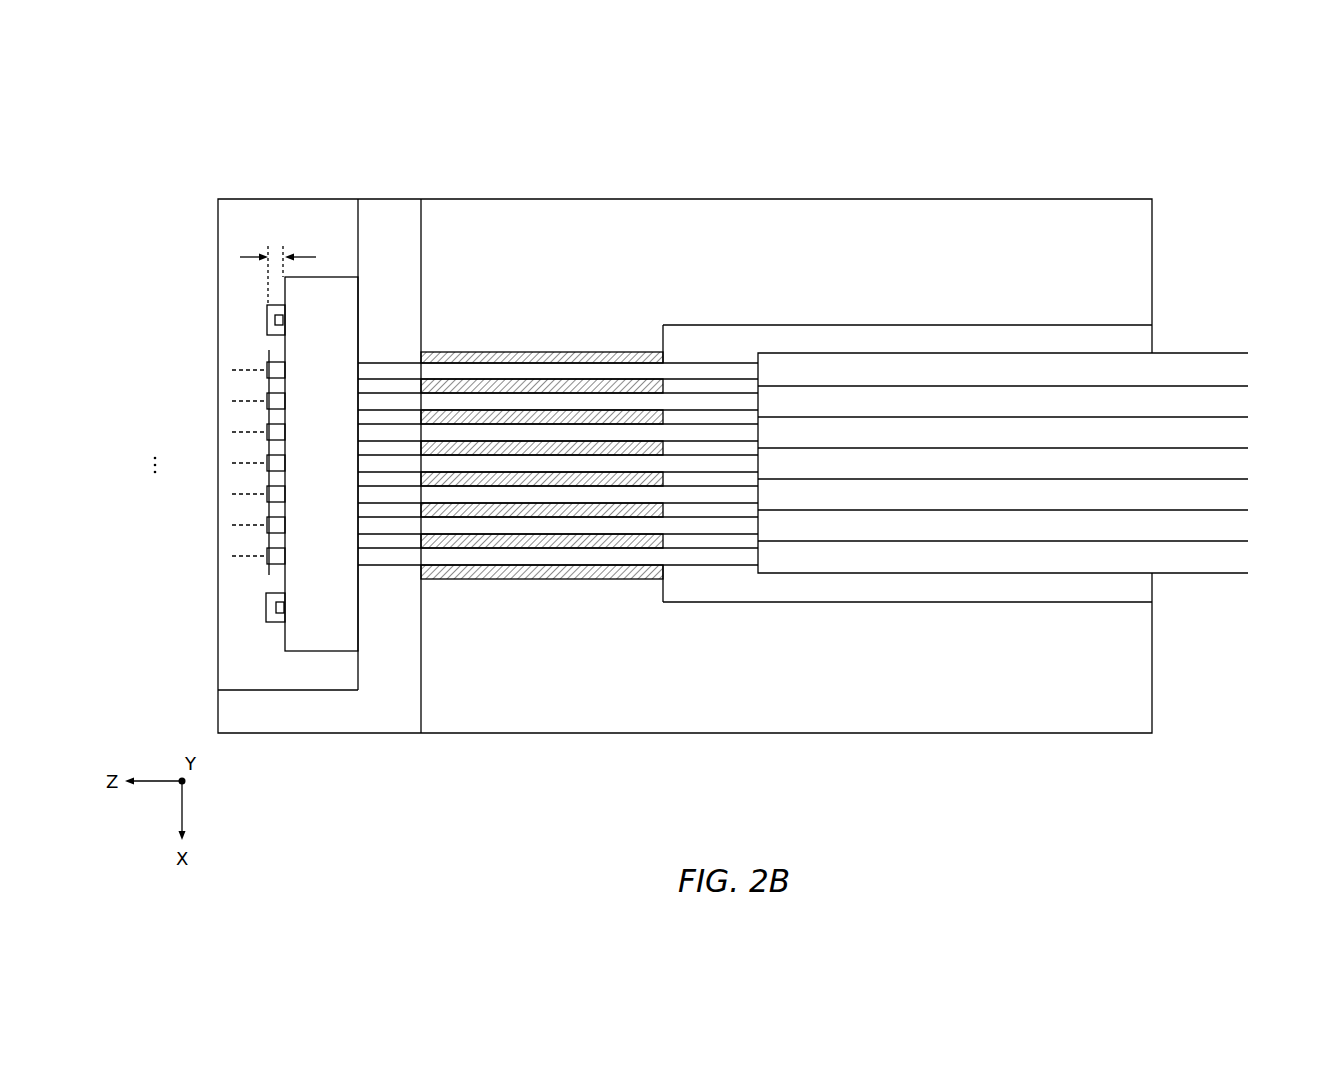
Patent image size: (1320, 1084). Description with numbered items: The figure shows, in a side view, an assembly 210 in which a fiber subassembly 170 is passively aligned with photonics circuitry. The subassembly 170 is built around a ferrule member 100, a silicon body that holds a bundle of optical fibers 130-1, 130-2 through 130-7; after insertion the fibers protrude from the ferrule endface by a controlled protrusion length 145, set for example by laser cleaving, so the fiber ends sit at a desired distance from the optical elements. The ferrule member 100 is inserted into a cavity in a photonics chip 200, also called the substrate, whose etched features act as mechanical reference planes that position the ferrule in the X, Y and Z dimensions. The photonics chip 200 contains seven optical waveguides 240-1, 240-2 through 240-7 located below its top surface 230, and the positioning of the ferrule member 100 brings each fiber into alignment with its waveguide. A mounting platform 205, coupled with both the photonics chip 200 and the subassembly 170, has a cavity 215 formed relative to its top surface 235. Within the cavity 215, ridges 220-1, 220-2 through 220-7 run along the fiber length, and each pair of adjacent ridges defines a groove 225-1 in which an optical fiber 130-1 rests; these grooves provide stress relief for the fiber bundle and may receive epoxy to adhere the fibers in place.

The ferrule member 100 is at (325, 637).
The optical fiber 130-1 is at (735, 388).
The optical fiber 130-2 is at (750, 393).
The optical fiber 130-7 is at (716, 566).
The protrusion length 145 is at (276, 244).
The subassembly 170 is at (1205, 603).
The photonics chip 200 is at (248, 199).
The mounting platform 205 is at (796, 198).
The assembly 210 is at (1175, 153).
The cavity 215 is at (1045, 590).
The ridge 220-1 is at (495, 352).
The ridge 220-2 is at (556, 385).
The ridge 220-7 is at (545, 579).
The groove 225-1 is at (585, 150).
The top surface 230 is at (323, 210).
The top surface 235 is at (987, 212).
The optical waveguide 240-1 is at (243, 370).
The optical waveguide 240-2 is at (243, 401).
The optical waveguide 240-7 is at (243, 556).